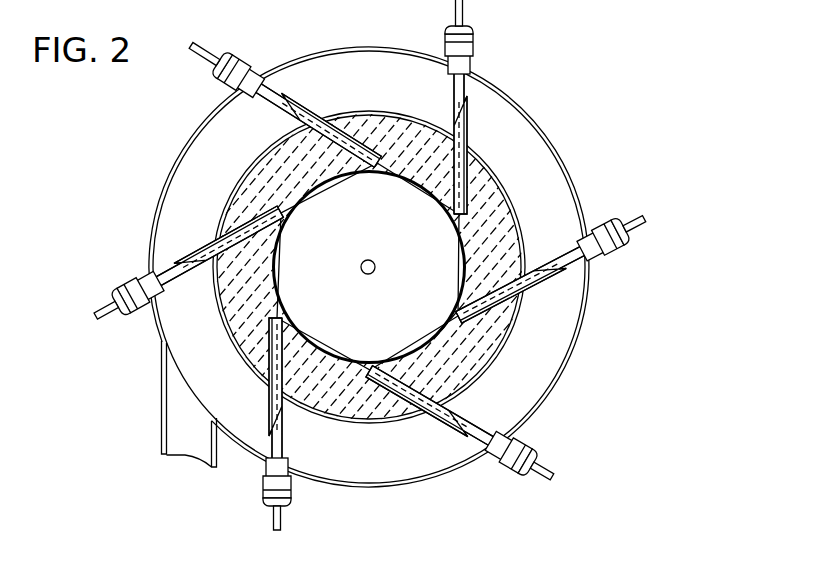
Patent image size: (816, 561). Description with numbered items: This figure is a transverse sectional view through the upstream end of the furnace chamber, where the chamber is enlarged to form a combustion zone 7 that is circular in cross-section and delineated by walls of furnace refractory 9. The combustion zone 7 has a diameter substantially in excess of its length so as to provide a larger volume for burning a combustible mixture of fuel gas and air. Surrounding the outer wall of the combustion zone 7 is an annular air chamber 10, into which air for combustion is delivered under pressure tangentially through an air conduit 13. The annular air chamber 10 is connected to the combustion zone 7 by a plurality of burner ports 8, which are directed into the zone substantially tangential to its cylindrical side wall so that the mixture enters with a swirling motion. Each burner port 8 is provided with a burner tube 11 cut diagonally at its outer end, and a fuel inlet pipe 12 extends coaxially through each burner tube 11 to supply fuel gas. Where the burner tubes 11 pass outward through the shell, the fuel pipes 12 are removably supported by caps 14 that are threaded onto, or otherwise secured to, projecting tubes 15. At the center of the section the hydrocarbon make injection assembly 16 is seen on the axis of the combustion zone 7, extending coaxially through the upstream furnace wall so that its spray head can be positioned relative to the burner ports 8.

The combustion zone 7 is at (338, 240).
The burner ports 8 is at (448, 213).
The furnace refractory 9 is at (510, 318).
The annular air chamber 10 is at (572, 334).
The burner tubes 11 is at (307, 111).
The fuel inlet pipes 12 is at (200, 47).
The air conduit 13 is at (168, 391).
The caps 14 is at (222, 58).
The projecting tubes 15 is at (247, 70).
The hydrocarbon make injection assembly 16 is at (374, 263).